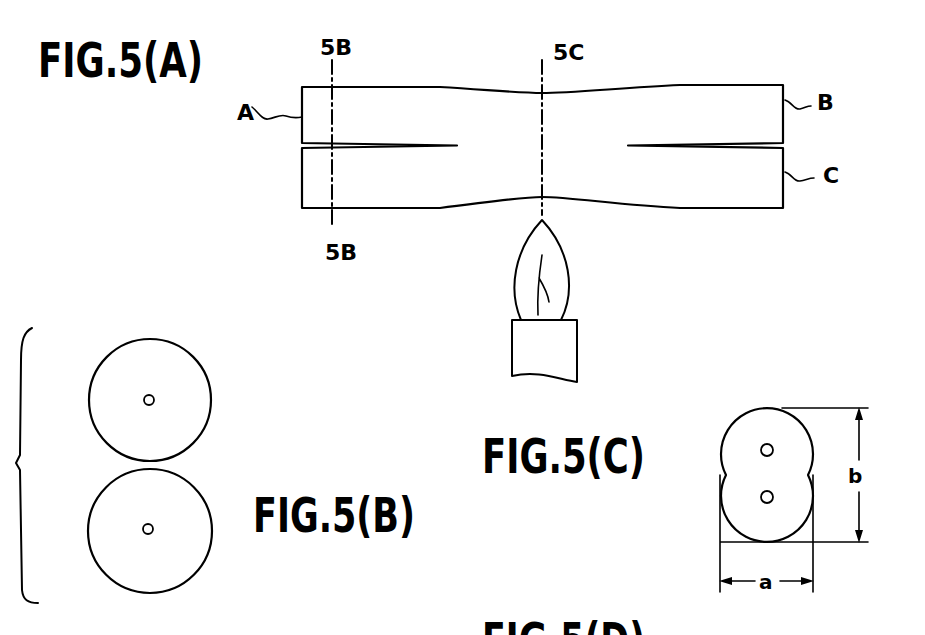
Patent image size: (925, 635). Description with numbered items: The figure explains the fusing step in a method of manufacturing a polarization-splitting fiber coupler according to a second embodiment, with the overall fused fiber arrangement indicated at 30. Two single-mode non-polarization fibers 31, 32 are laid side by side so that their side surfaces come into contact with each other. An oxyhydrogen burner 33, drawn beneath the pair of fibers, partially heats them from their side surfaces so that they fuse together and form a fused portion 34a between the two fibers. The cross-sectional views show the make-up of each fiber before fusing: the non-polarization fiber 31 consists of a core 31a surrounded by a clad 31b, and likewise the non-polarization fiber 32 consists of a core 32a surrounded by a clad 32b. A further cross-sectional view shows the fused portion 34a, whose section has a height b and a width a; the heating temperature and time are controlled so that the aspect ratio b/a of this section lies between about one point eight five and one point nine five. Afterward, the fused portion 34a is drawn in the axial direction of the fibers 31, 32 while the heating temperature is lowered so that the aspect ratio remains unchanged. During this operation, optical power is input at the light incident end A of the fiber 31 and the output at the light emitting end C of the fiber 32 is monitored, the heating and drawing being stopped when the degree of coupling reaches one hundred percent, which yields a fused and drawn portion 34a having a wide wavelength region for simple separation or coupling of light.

In FIG. 5A, the fused optical fiber coupler 30 is at (683, 82).
In FIG. 5A, the non-polarization fiber 31 is at (380, 86).
In FIG. 5B, the non-polarization fiber 31 is at (207, 376).
In FIG. 5B, the core of the non-polarization fiber 31a is at (150, 394).
In FIG. 5B, the clad of the non-polarization fiber 31b is at (100, 412).
In FIG. 5A, the non-polarization fiber 32 is at (405, 210).
In FIG. 5B, the non-polarization fiber 32 is at (200, 572).
In FIG. 5B, the core of the non-polarization fiber 32a is at (143, 525).
In FIG. 5B, the clad of the non-polarization fiber 32b is at (103, 553).
In FIG. 5A, the oxyhydrogen burner 33 is at (577, 342).
In FIG. 5A, the fused portion 34a is at (516, 87).
In FIG. 5C, the fused portion 34a is at (720, 540).